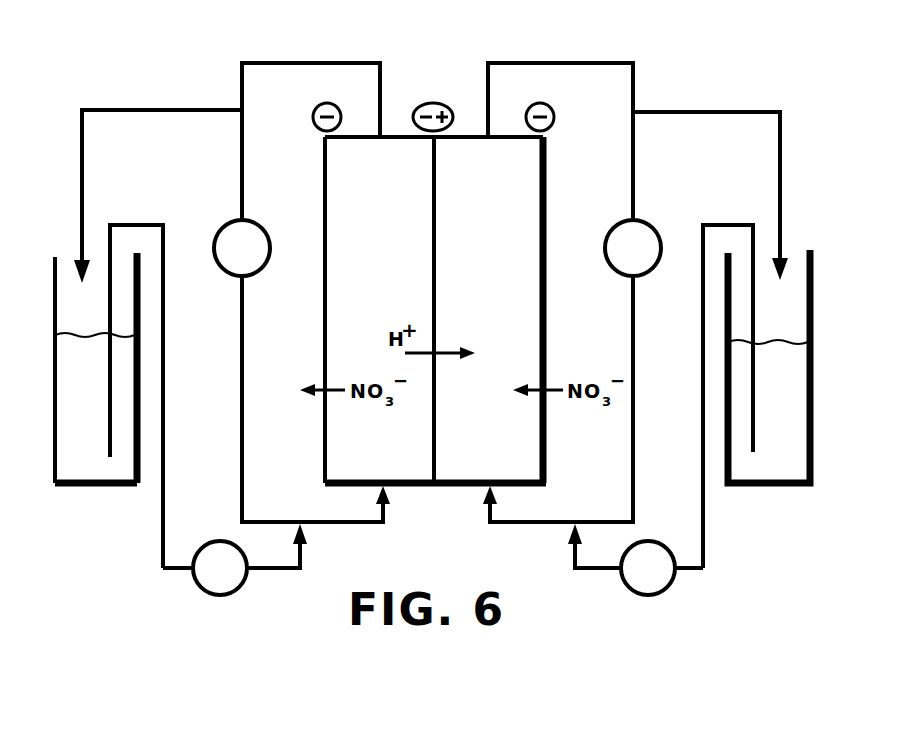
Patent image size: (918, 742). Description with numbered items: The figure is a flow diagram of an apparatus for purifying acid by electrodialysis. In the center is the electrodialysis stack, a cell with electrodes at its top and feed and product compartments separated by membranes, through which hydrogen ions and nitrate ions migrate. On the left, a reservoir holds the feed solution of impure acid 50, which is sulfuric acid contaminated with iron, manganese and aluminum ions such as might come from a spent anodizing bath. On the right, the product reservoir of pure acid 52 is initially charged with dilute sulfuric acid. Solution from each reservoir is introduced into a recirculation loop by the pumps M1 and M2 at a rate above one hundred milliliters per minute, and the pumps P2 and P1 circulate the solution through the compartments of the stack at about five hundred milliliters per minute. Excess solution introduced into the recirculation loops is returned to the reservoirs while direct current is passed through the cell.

The feed solution (impure acid) 50 is at (88, 490).
The product reservoir (pure acid) 52 is at (760, 485).
The recirculation pump P1 is at (633, 248).
The recirculation pump P2 is at (242, 248).
The reservoir feed pump M1 is at (648, 568).
The reservoir feed pump M2 is at (220, 568).